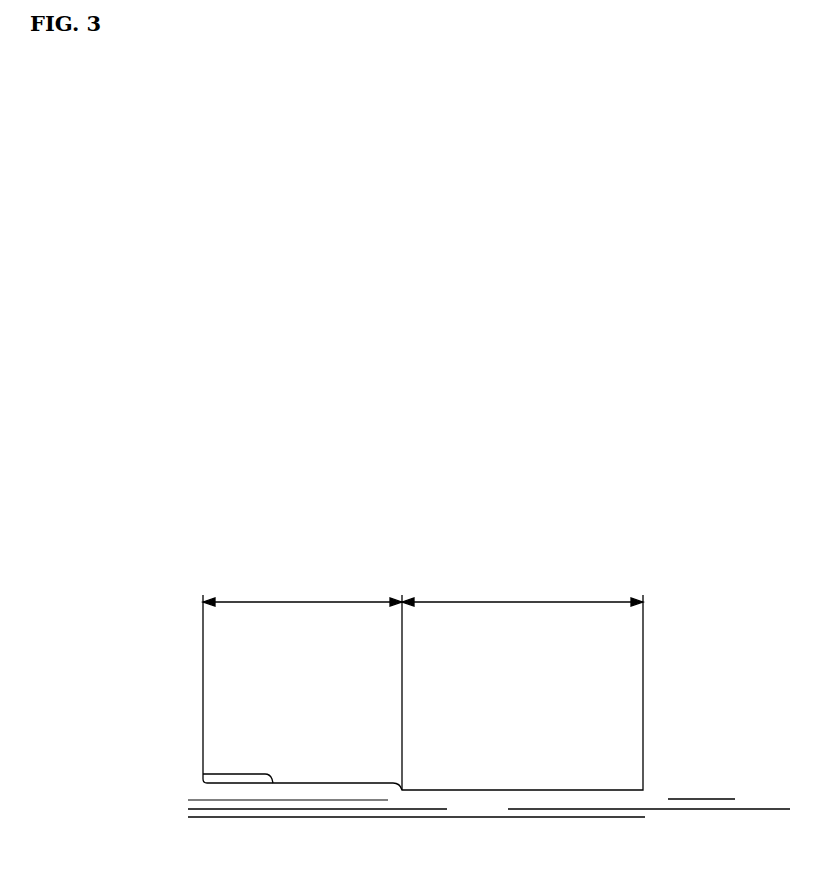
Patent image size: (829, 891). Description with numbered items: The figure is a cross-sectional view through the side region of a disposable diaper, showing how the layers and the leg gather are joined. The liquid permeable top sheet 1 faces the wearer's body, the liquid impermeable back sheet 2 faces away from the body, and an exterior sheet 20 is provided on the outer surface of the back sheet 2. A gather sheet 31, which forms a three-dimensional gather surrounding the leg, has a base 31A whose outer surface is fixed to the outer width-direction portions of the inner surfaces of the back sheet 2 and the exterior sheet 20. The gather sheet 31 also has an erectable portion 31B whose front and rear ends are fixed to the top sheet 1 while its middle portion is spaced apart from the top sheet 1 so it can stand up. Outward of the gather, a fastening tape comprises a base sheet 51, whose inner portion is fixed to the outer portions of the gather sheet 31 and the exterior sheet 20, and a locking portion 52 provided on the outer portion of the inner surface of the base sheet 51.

The top sheet 1 is at (328, 802).
The back sheet 2 is at (332, 818).
The exterior sheet 20 is at (522, 818).
The gather sheet 31 is at (523, 790).
The base 31A is at (522, 590).
The erectable portion 31B is at (302, 590).
The base sheet 51 is at (758, 810).
The locking portion 52 is at (710, 798).